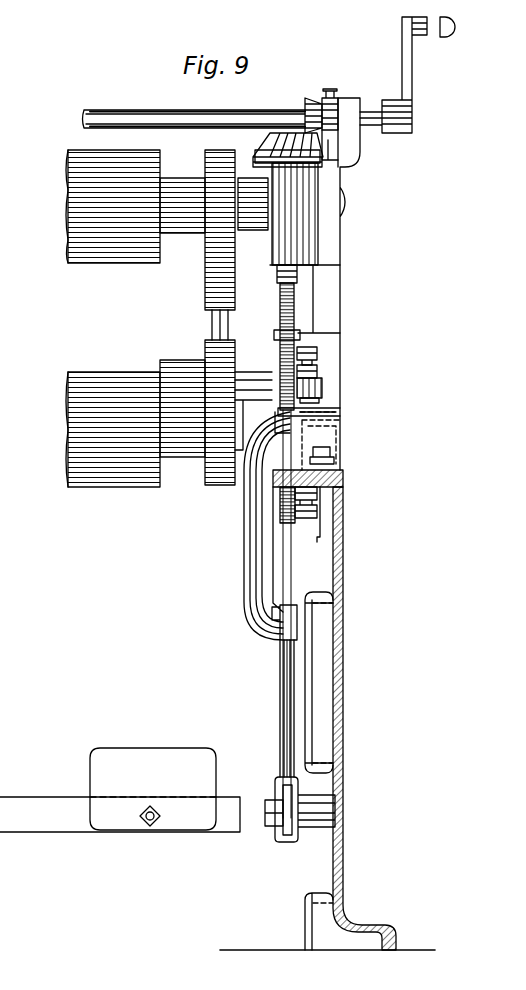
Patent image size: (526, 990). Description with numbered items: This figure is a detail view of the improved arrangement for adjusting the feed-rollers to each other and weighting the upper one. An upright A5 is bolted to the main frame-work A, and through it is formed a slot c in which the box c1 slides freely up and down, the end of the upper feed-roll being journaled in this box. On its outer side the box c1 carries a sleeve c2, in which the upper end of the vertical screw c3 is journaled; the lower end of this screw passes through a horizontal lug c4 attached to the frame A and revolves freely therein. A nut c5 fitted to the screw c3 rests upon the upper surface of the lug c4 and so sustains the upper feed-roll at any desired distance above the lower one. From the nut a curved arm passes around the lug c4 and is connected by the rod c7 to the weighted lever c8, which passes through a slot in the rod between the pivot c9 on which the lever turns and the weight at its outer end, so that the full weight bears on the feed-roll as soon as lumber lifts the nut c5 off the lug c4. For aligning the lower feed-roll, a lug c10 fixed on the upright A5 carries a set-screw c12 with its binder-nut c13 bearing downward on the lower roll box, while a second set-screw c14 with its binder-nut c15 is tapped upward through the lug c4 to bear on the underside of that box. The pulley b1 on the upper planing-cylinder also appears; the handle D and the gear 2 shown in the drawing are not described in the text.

The crank handle D is at (407, 75).
The box c1 is at (343, 183).
The sleeve c2 is at (270, 262).
The slot c is at (300, 292).
The upright A5 is at (342, 300).
The vertical screw c3 is at (280, 335).
The set-screw c12 is at (318, 352).
The binder-nut c13 is at (318, 368).
The lug c10 is at (325, 385).
The nut c5 is at (302, 413).
The horizontal lug c4 is at (332, 432).
The binder-nut c15 is at (345, 488).
The set-screw c14 is at (320, 508).
The main frame-work A is at (345, 636).
The rod c7 is at (280, 683).
The pivot c9 is at (266, 800).
The weighted lever c8 is at (40, 796).
The pulley b1 is at (121, 318).
The gear 2 is at (238, 480).